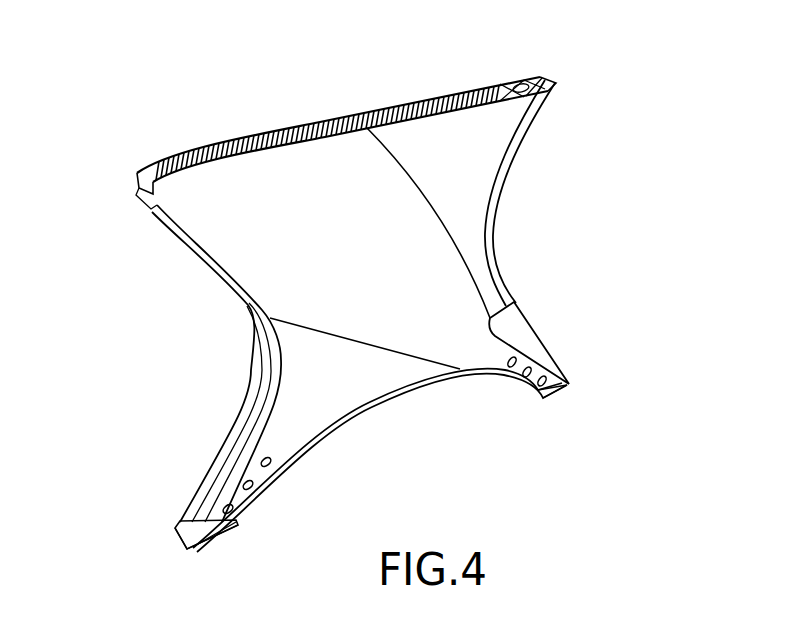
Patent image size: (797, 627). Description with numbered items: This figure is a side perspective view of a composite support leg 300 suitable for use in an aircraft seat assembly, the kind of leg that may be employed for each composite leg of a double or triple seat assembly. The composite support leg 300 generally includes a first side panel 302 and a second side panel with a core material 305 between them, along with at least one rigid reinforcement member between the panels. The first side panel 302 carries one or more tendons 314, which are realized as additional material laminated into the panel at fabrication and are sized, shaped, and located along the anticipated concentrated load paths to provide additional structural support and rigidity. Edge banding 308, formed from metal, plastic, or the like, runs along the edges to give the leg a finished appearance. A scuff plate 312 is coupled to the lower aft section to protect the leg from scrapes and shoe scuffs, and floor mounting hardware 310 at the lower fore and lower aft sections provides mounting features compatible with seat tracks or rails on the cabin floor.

The composite support leg 300 is at (126, 102).
The first side panel 302 is at (337, 410).
The core material 305 is at (443, 96).
The edge banding 308 is at (495, 198).
The floor mounting hardware 310 is at (563, 387).
The scuff plate 312 is at (543, 333).
The tendon 314 is at (417, 187).